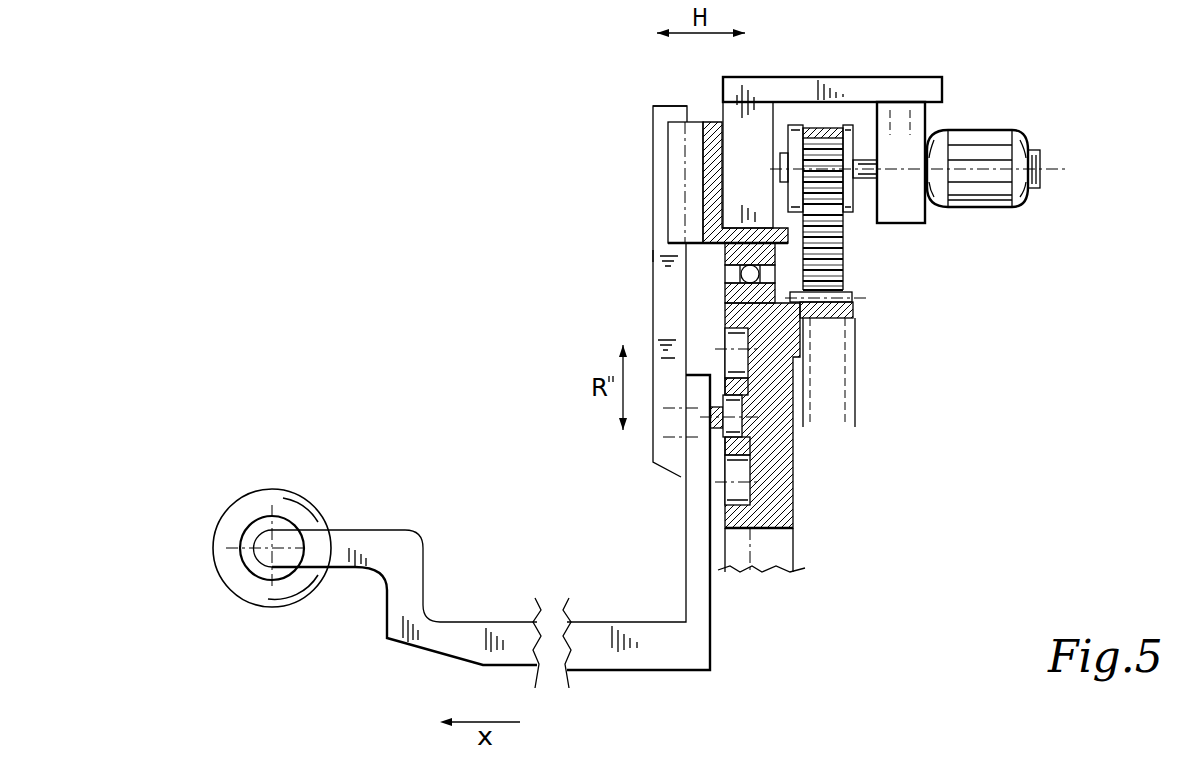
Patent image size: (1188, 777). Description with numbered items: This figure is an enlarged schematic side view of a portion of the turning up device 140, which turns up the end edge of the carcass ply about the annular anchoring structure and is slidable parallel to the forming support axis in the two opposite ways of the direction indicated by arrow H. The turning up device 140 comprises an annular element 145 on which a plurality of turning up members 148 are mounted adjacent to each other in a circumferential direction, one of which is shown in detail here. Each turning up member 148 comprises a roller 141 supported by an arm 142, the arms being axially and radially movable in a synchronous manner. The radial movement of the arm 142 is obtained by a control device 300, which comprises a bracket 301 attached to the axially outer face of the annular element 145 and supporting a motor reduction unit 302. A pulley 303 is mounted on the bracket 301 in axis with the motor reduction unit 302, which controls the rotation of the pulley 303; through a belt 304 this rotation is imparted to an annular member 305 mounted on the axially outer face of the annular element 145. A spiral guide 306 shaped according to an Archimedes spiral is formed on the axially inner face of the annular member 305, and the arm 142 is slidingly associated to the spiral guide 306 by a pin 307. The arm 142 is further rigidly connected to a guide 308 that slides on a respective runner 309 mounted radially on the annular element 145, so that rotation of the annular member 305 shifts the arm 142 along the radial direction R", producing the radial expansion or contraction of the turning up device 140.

The turning up device 140 is at (650, 95).
The roller 141 is at (268, 497).
The arm 142 is at (695, 518).
The annular element 145 is at (712, 122).
The turning up member 148 is at (635, 252).
The control device 300 is at (864, 250).
The bracket 301 is at (853, 88).
The motor reduction unit 302 is at (995, 150).
The pulley 303 is at (853, 212).
The belt 304 is at (843, 268).
The annular member 305 is at (795, 480).
The spiral guide 306 is at (790, 503).
The pin 307 is at (712, 408).
The guide 308 is at (662, 283).
The runner 309 is at (675, 165).